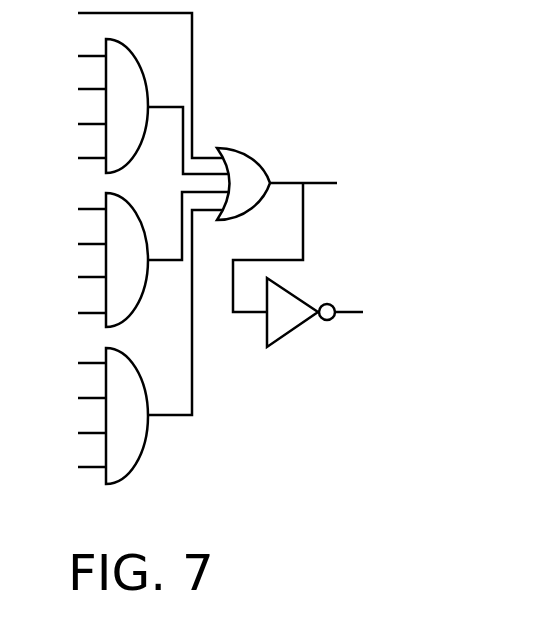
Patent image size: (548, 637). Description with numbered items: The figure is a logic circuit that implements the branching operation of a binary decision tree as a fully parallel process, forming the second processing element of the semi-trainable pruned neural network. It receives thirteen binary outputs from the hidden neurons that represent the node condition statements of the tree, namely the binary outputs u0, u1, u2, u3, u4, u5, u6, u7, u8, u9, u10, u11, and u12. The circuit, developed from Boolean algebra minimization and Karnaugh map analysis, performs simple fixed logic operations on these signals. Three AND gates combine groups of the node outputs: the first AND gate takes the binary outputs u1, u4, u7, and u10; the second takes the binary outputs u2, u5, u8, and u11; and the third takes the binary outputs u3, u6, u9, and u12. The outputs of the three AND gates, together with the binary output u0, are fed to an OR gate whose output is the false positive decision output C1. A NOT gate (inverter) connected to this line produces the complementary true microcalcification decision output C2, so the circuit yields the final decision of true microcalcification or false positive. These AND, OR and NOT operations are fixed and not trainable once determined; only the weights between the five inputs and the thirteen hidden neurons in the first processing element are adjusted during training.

The false positive decision output C1 is at (277, 184).
The true microcalcification decision output C2 is at (300, 271).
The binary output u0 is at (131, 79).
The binary output u1 is at (73, 60).
The binary output u2 is at (73, 213).
The binary output u3 is at (73, 367).
The binary output u4 is at (73, 93).
The binary output u5 is at (73, 248).
The binary output u6 is at (73, 402).
The binary output u7 is at (73, 128).
The binary output u8 is at (73, 281).
The binary output u9 is at (73, 437).
The binary output u10 is at (73, 161).
The binary output u11 is at (73, 316).
The binary output u12 is at (73, 470).